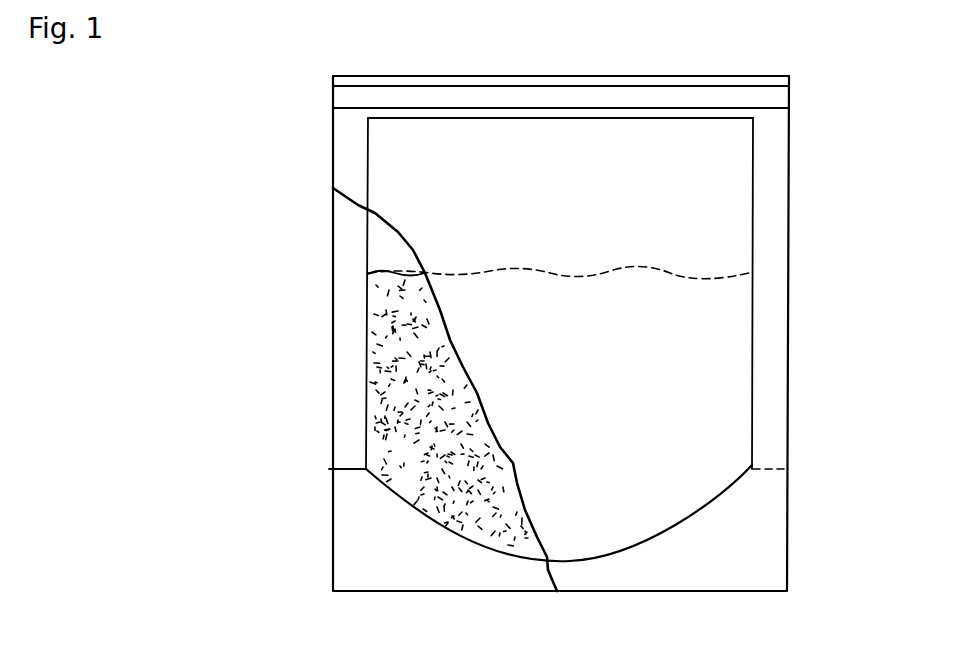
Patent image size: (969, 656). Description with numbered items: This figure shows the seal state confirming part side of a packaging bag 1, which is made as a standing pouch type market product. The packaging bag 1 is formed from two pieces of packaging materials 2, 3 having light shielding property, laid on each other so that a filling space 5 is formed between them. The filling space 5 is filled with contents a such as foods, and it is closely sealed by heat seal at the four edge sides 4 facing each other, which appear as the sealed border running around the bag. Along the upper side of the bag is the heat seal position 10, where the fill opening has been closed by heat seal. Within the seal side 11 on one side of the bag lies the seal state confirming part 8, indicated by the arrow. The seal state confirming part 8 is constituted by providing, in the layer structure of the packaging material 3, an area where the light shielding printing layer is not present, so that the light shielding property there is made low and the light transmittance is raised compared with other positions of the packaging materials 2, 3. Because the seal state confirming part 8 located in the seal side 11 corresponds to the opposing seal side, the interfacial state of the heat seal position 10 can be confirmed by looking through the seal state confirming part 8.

The packaging bag 1 is at (306, 401).
The packaging material 2 is at (350, 324).
The packaging material 3 is at (617, 519).
The edge side 4 is at (423, 76).
The filling space 5 is at (713, 222).
The seal state confirming part 8 is at (771, 96).
The heat seal position 10 is at (507, 76).
The seal side 11 is at (597, 76).
The contents a is at (392, 270).